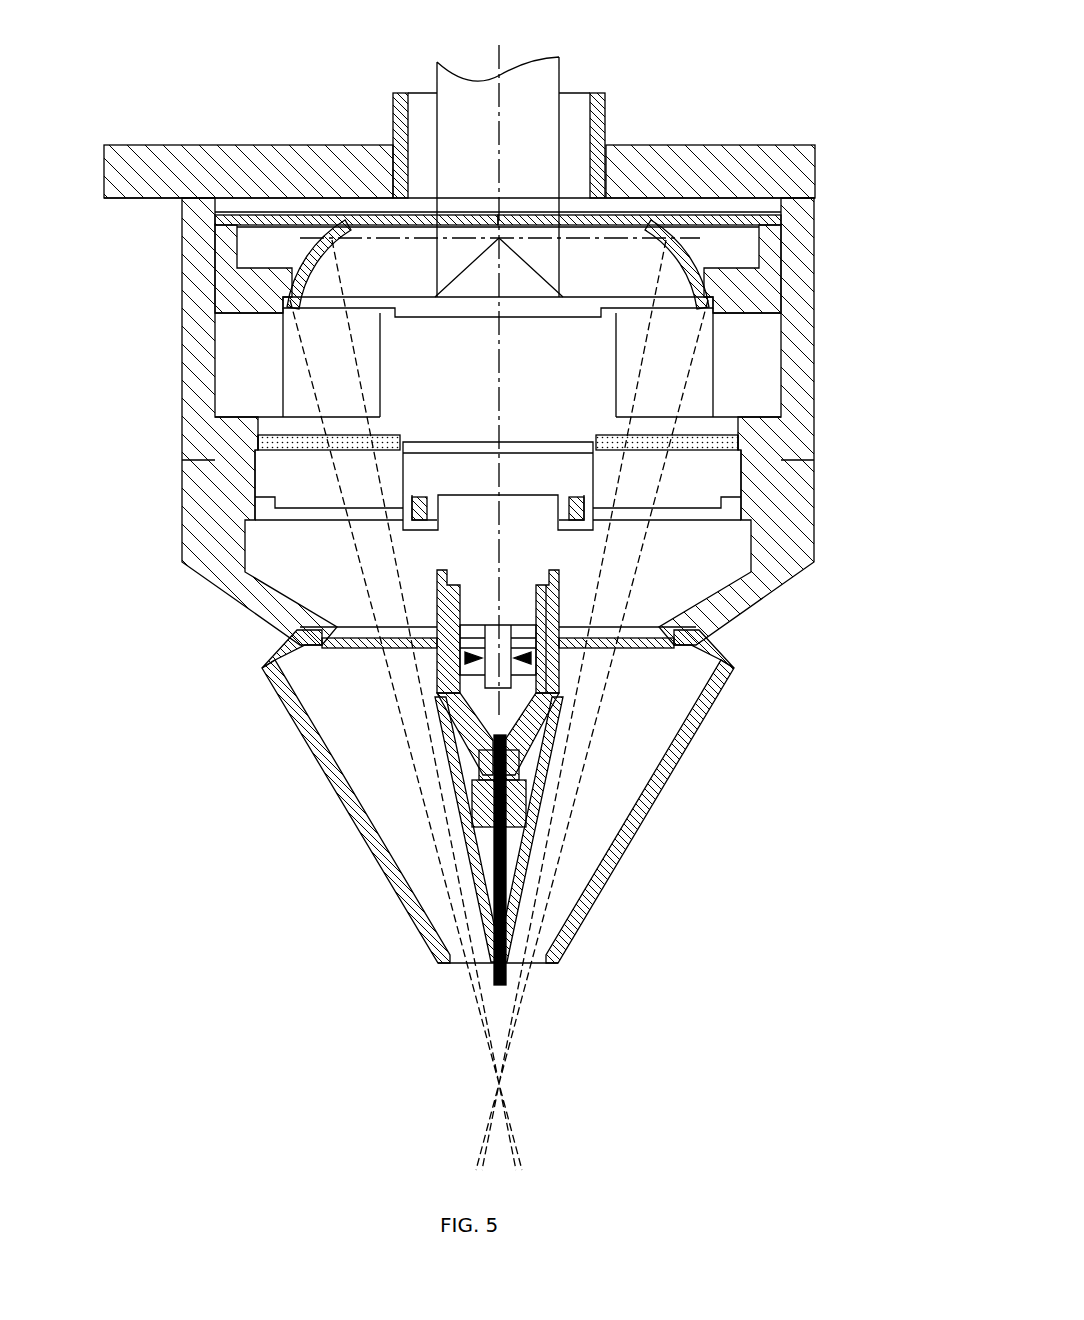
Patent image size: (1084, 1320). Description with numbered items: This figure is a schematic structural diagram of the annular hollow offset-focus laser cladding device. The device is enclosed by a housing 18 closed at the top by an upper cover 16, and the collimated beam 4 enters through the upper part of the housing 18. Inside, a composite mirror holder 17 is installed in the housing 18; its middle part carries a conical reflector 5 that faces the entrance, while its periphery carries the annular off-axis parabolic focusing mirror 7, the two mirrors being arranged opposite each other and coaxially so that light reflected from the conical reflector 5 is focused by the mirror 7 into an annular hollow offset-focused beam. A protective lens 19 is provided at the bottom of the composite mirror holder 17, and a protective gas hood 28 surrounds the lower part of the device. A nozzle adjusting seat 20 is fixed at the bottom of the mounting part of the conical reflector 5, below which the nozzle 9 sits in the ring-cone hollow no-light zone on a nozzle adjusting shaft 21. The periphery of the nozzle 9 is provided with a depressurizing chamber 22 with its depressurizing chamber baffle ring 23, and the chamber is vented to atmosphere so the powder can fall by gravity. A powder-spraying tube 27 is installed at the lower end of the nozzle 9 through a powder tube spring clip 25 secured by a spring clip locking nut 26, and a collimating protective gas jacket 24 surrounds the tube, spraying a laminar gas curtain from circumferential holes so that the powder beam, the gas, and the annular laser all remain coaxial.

The collimated beam 4 is at (560, 82).
The upper cover 16 is at (667, 145).
The conical reflector 5 is at (535, 272).
The composite mirror holder 17 is at (598, 291).
The annular off-axis parabolic focusing mirror 7 is at (520, 340).
The housing 18 is at (798, 326).
The protective lens 19 is at (650, 440).
The nozzle 9 is at (490, 495).
The nozzle adjusting seat 20 is at (557, 528).
The nozzle adjusting shaft 21 is at (498, 600).
The depressurizing chamber 22 is at (450, 652).
The depressurizing chamber baffle ring 23 is at (470, 700).
The collimating protective gas jacket 24 is at (455, 738).
The powder tube spring clip 25 is at (468, 770).
The spring clip locking nut 26 is at (478, 805).
The powder-spraying tube 27 is at (480, 852).
The protective gas hood 28 is at (503, 855).